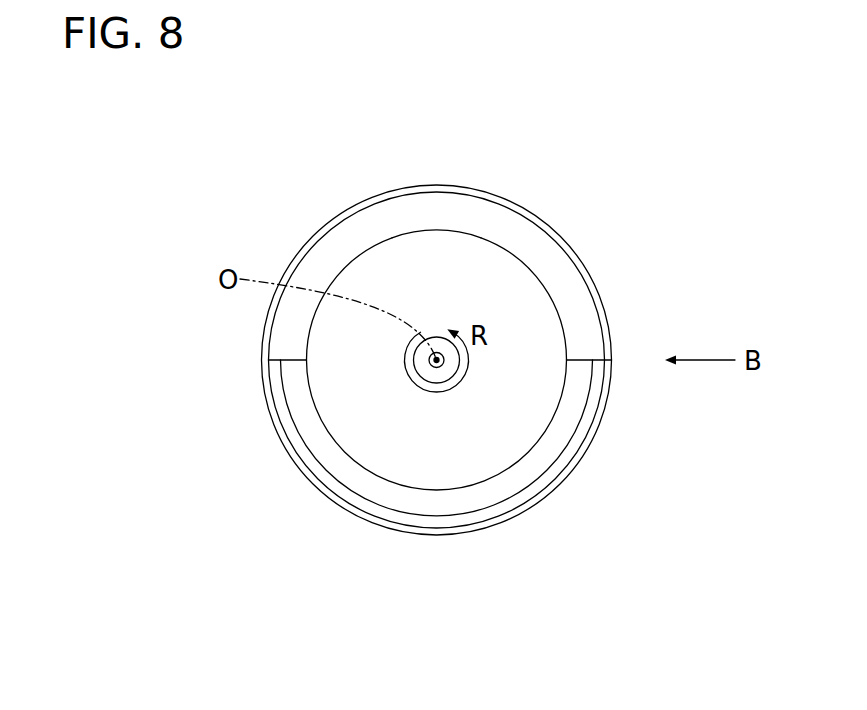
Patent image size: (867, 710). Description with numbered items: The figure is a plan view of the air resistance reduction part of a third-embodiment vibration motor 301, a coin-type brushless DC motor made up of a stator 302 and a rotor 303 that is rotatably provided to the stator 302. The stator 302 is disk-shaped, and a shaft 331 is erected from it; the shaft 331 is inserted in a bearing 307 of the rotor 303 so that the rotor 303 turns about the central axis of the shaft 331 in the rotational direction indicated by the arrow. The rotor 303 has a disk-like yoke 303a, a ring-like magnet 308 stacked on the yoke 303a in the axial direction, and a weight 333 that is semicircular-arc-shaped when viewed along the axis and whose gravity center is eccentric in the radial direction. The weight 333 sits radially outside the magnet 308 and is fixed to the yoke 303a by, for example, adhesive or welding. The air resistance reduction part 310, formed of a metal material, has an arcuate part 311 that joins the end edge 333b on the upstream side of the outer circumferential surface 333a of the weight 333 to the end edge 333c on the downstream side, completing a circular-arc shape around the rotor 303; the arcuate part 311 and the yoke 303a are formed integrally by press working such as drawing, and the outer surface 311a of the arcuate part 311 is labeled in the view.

The vibration motor 301 is at (245, 165).
The stator 302 is at (600, 293).
The rotor 303 is at (577, 250).
The yoke 303a is at (523, 410).
The bearing 307 is at (418, 377).
The magnet 308 is at (497, 450).
The air resistance reduction part 310 is at (404, 527).
The arcuate part 311 is at (277, 420).
The outer peripheral surface 311a is at (305, 475).
The shaft 331 is at (436, 368).
The weight 333 is at (520, 232).
The outer circumferential surface 333a is at (433, 190).
The end edge on the upstream side 333b is at (268, 363).
The end edge on the downstream side 333c is at (614, 366).